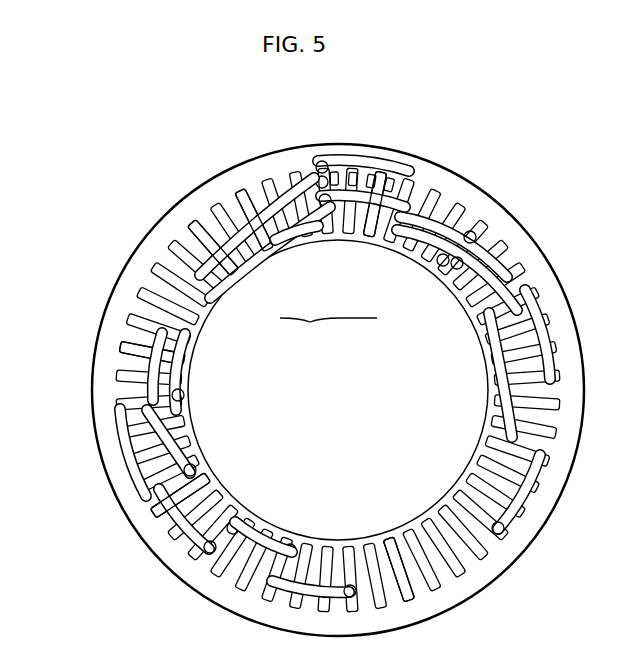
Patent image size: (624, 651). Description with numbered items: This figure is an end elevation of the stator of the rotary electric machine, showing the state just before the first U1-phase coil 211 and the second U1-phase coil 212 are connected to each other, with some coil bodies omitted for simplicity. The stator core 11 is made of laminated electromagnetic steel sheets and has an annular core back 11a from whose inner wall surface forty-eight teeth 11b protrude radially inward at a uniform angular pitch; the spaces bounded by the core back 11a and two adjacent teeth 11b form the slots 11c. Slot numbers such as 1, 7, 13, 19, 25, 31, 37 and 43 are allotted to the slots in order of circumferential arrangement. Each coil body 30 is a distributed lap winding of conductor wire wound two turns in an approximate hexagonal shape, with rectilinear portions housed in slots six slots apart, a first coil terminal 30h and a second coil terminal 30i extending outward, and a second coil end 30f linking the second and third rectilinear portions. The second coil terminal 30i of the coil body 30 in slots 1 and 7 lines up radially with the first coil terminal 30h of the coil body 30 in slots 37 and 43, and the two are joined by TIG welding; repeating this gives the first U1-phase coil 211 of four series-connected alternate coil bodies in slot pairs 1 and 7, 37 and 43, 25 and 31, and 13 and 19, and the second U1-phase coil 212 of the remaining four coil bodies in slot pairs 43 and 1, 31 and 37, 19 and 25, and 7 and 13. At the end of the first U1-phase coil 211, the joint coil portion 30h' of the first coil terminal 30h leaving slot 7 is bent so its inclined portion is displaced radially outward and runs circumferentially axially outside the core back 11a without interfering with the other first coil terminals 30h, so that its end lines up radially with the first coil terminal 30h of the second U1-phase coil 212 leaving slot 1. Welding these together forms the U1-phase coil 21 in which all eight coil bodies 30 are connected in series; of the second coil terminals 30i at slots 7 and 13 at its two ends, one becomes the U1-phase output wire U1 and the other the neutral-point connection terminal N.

The stator core 11 is at (126, 250).
The core back 11a is at (107, 347).
The teeth 11b is at (130, 400).
The slots 11c is at (110, 383).
The slot number 1 is at (251, 210).
The slot number 7 is at (391, 197).
The slot number 13 is at (528, 356).
The slot number 19 is at (535, 492).
The slot number 25 is at (421, 574).
The slot number 31 is at (398, 176).
The slot number 37 is at (164, 495).
The slot number 43 is at (145, 339).
The U1-phase coil 21 is at (328, 333).
The first U1-phase coil 211 is at (313, 222).
The second U1-phase coil 212 is at (235, 273).
The coil body 30 is at (183, 417).
The second coil end 30f is at (187, 393).
The first coil terminal 30h is at (188, 198).
The joint coil portion 30h' is at (363, 132).
The second coil terminal 30i is at (217, 237).
The neutral-point connection terminal N is at (340, 193).
The U1-phase output wire U1 is at (487, 243).